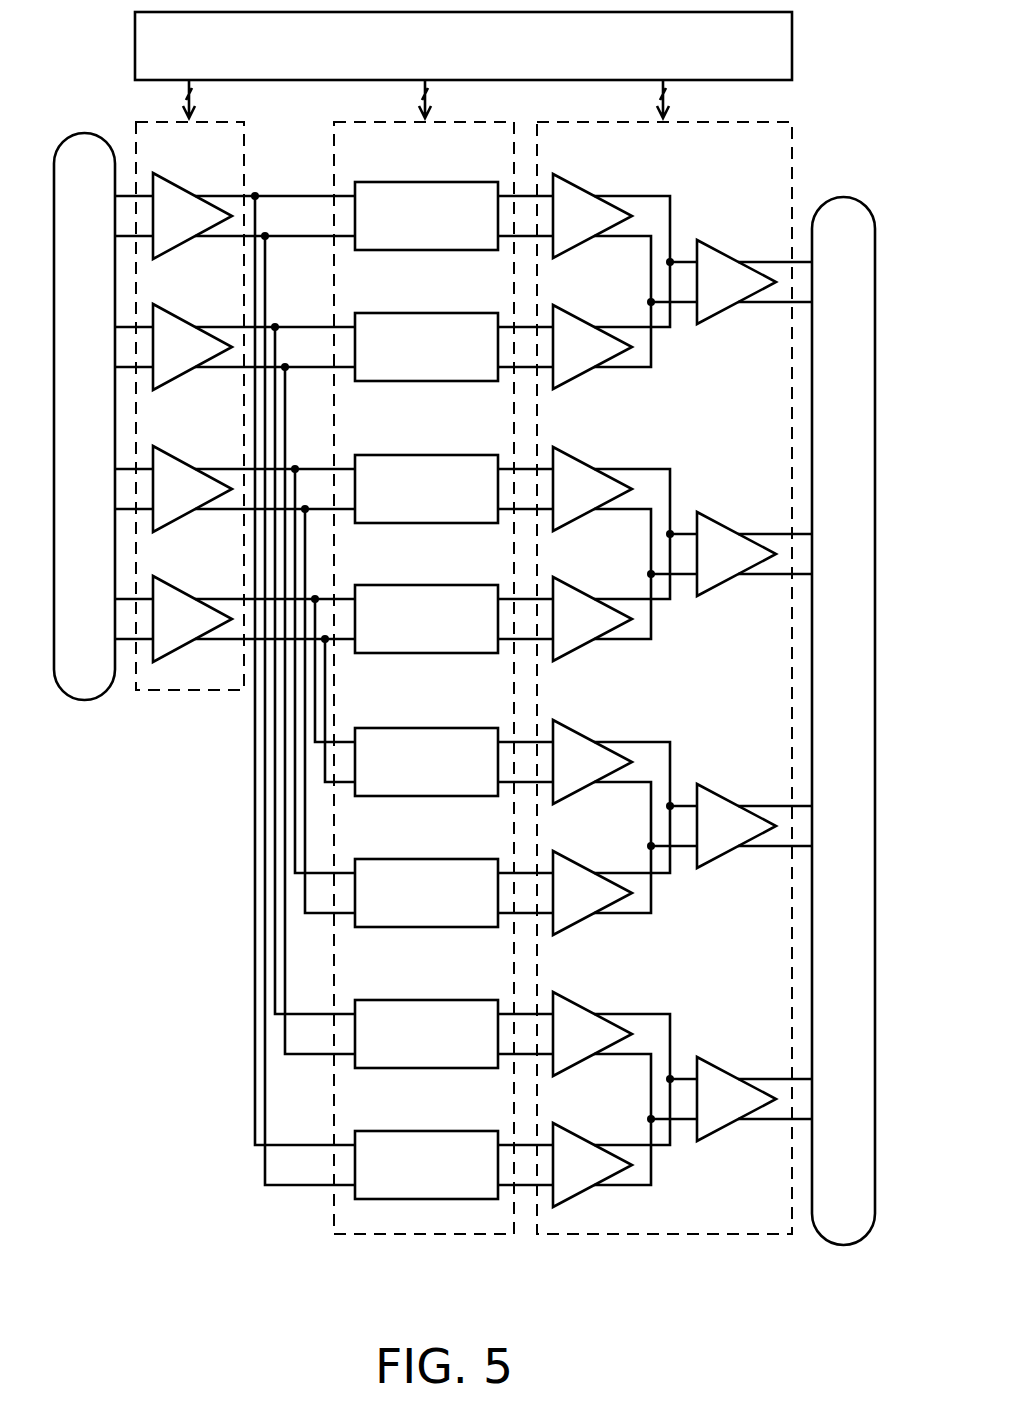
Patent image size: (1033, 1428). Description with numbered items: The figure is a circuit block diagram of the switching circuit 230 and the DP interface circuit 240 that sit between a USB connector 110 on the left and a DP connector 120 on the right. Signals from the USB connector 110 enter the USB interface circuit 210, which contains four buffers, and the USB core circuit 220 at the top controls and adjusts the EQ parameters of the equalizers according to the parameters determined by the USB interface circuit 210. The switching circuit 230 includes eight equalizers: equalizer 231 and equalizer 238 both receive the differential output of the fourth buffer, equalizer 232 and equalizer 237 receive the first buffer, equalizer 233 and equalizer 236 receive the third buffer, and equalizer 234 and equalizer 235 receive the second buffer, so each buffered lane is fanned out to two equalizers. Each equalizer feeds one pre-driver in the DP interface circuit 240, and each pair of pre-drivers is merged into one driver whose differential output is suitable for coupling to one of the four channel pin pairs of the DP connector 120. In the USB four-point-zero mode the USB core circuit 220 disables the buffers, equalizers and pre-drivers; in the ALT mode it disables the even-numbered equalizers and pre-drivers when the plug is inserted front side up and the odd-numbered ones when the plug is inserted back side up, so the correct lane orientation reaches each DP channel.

The USB connector 110 is at (83, 702).
The DP connector 120 is at (843, 1247).
The USB interface circuit 210 is at (178, 692).
The USB core circuit 220 is at (792, 45).
The switching circuit 230 is at (423, 1236).
The equalizer 231 is at (428, 182).
The equalizer 232 is at (428, 313).
The equalizer 233 is at (428, 455).
The equalizer 234 is at (428, 585).
The equalizer 235 is at (428, 728).
The equalizer 236 is at (428, 859).
The equalizer 237 is at (428, 1000).
The equalizer 238 is at (428, 1131).
The DP interface circuit 240 is at (665, 1236).